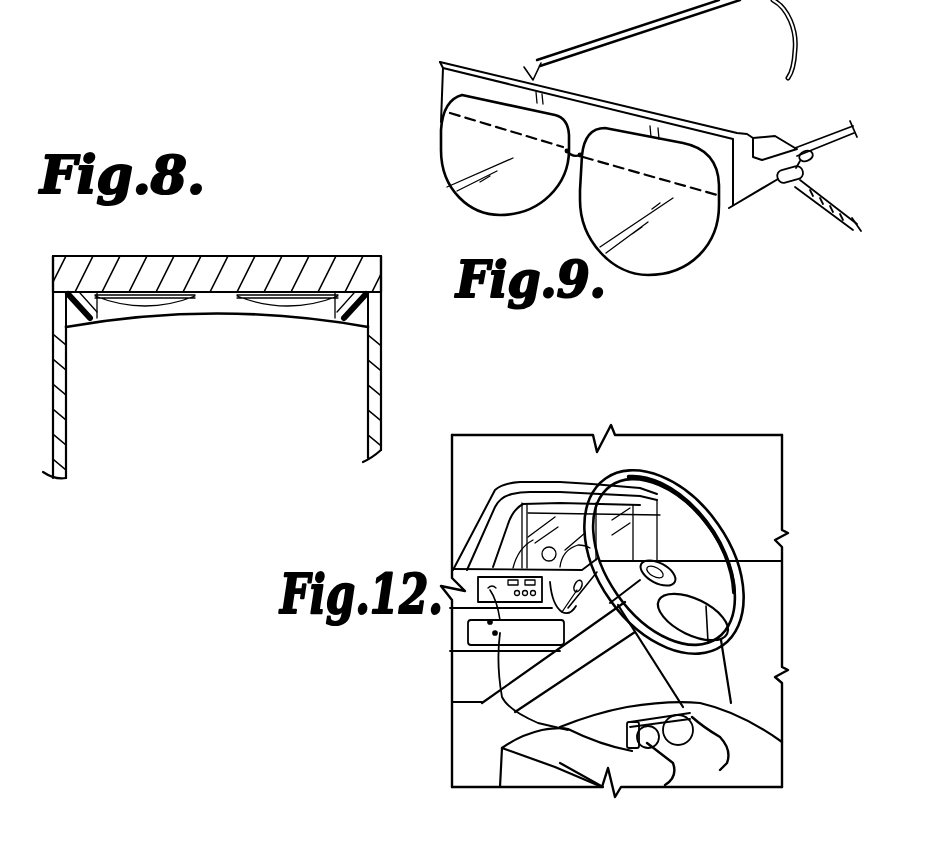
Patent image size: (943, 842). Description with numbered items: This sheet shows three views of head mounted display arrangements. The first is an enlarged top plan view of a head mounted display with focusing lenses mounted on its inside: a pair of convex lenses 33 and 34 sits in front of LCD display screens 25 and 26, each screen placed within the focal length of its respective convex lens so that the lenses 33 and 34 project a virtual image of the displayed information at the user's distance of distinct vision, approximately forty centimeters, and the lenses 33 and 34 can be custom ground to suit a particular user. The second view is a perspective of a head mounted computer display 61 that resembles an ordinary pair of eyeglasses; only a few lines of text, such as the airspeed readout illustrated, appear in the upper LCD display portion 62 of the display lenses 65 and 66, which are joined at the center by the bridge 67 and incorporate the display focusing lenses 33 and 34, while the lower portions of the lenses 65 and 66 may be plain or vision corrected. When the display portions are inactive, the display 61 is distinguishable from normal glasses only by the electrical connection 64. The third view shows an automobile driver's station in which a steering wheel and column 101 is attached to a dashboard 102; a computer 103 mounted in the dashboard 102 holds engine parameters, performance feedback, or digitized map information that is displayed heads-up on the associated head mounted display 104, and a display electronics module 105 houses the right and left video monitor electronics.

In FIG. 8, the LCD display screen 25 is at (158, 257).
In FIG. 8, the LCD display screen 26 is at (295, 257).
In FIG. 8, the convex lens 33 is at (163, 303).
In FIG. 8, the convex lens 34 is at (306, 303).
In FIG. 9, the head mounted computer display 61 is at (412, 89).
In FIG. 9, the upper LCD display portion 62 is at (515, 142).
In FIG. 9, the electrical connection 64 is at (802, 150).
In FIG. 9, the display lens 65 is at (445, 182).
In FIG. 9, the display lens 66 is at (707, 253).
In FIG. 9, the bridge 67 is at (599, 152).
In FIG. 12, the automobile steering wheel and column 101 is at (703, 518).
In FIG. 12, the dashboard 102 is at (488, 497).
In FIG. 12, the computer 103 is at (512, 593).
In FIG. 12, the head mounted display 104 is at (700, 723).
In FIG. 12, the display electronics module 105 is at (498, 634).